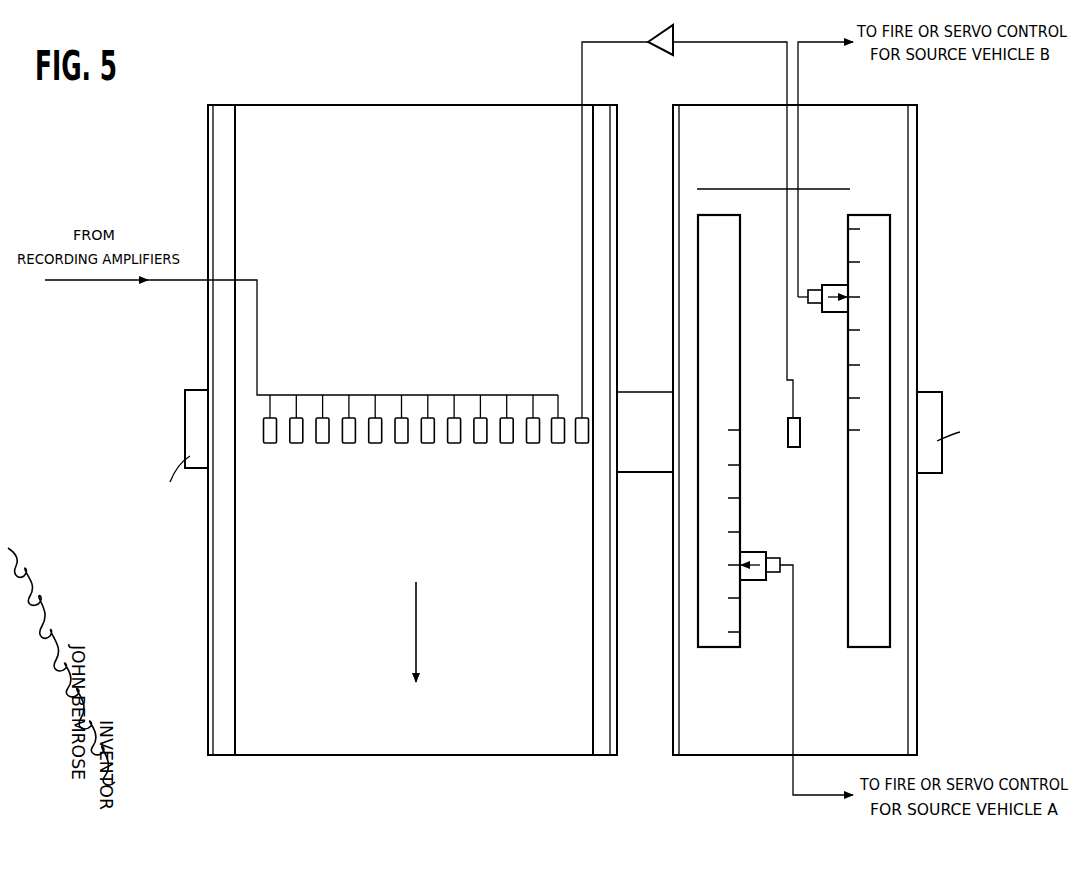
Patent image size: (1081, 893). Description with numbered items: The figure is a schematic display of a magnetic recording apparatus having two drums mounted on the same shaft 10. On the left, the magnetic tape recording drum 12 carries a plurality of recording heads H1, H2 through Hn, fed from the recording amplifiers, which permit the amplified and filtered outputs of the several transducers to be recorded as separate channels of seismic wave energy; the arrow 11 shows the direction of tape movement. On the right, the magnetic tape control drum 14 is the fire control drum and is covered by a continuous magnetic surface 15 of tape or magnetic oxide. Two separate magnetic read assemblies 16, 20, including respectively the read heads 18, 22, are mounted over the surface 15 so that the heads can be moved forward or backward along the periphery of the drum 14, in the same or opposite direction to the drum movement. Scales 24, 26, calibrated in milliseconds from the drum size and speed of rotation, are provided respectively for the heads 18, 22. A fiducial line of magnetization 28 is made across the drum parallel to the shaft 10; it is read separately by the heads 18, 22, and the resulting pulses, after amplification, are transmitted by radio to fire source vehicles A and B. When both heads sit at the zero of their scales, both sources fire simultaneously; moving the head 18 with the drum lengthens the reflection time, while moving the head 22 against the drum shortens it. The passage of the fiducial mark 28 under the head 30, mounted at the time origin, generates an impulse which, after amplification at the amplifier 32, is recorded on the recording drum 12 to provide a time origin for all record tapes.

The shaft 10 is at (188, 441).
The arrow 11 is at (417, 617).
The magnetic tape recording drum 12 is at (394, 103).
The magnetic tape control drum 14 is at (922, 150).
The magnetic surface 15 is at (835, 105).
The magnetic read assembly 16 is at (742, 397).
The read head 18 is at (756, 579).
The magnetic read assembly 20 is at (848, 386).
The read head 22 is at (830, 285).
The scale 24 is at (711, 648).
The scale 26 is at (876, 648).
The fiducial line of magnetization 28 is at (798, 190).
The head 30 is at (800, 432).
The amplifier 32 is at (672, 46).
The recording head H1 is at (268, 444).
The recording head H2 is at (300, 444).
The recording head Hn is at (559, 444).